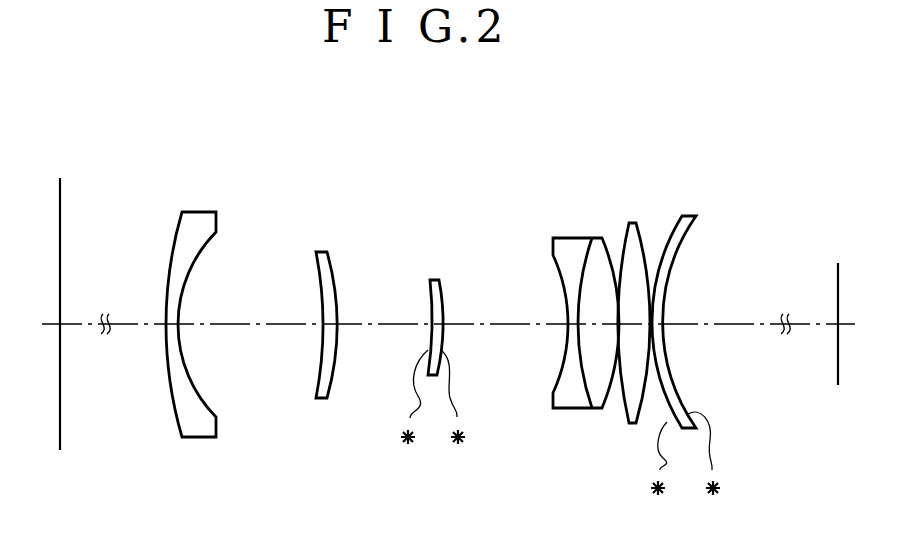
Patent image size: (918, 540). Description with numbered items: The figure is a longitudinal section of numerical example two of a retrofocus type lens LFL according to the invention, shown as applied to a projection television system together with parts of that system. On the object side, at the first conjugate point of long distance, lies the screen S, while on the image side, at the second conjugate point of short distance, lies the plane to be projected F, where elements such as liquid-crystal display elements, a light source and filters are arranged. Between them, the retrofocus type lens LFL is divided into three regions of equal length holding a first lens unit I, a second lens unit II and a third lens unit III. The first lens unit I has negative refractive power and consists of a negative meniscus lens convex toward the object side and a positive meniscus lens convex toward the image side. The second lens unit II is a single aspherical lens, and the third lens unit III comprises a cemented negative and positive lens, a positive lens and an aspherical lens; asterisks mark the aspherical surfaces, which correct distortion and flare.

The screen S is at (62, 223).
The plane to be projected F is at (838, 283).
The retrofocus type lens LFL is at (742, 126).
The first lens unit I is at (350, 189).
The second lens unit II is at (524, 189).
The third lens unit III is at (739, 189).